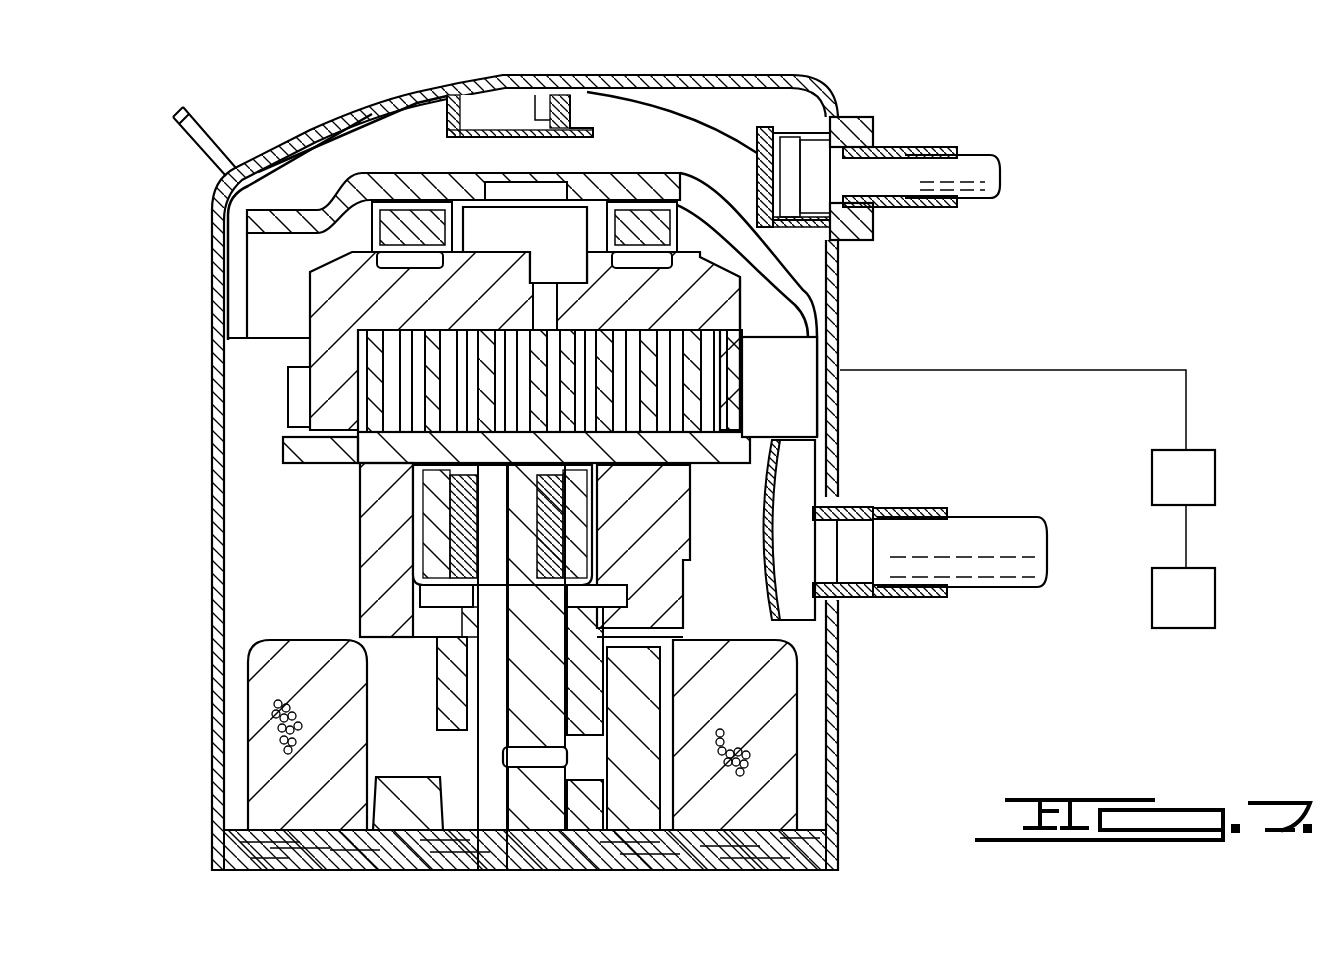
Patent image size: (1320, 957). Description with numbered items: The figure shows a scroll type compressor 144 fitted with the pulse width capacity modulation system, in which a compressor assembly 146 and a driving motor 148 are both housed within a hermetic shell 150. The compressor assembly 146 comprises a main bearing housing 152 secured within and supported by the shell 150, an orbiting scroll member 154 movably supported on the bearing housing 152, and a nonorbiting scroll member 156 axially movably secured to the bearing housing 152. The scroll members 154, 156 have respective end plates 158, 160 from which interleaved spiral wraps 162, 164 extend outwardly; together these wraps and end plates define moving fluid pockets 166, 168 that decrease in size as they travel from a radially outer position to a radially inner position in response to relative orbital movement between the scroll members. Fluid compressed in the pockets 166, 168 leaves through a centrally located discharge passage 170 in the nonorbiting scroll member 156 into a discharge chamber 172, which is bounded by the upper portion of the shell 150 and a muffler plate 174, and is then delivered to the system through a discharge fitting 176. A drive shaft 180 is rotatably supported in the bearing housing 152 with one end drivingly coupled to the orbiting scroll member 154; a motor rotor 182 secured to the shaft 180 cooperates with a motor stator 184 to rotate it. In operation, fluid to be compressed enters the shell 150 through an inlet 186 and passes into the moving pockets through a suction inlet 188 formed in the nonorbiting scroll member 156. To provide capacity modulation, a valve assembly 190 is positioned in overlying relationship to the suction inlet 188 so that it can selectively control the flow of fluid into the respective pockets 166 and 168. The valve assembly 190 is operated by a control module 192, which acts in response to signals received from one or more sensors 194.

The scroll type compressor 144 is at (966, 306).
The compressor assembly 146 is at (244, 382).
The driving motor 148 is at (242, 611).
The hermetic shell 150 is at (213, 742).
The main bearing housing 152 is at (358, 558).
The orbiting scroll member 154 is at (276, 452).
The nonorbiting scroll member 156 is at (752, 288).
The end plate 158 is at (725, 457).
The end plate 160 is at (365, 318).
The spiral wrap 162 is at (363, 370).
The spiral wrap 164 is at (407, 388).
The moving fluid pocket 166 is at (392, 418).
The moving fluid pocket 168 is at (680, 388).
The discharge passage 170 is at (548, 242).
The discharge chamber 172 is at (658, 152).
The muffler plate 174 is at (390, 178).
The discharge fitting 176 is at (875, 118).
The drive shaft 180 is at (556, 675).
The motor rotor 182 is at (398, 855).
The motor stator 184 is at (828, 845).
The inlet 186 is at (880, 597).
The suction inlet 188 is at (730, 370).
The valve assembly 190 is at (798, 424).
The control module 192 is at (1210, 472).
The sensors 194 is at (1210, 597).